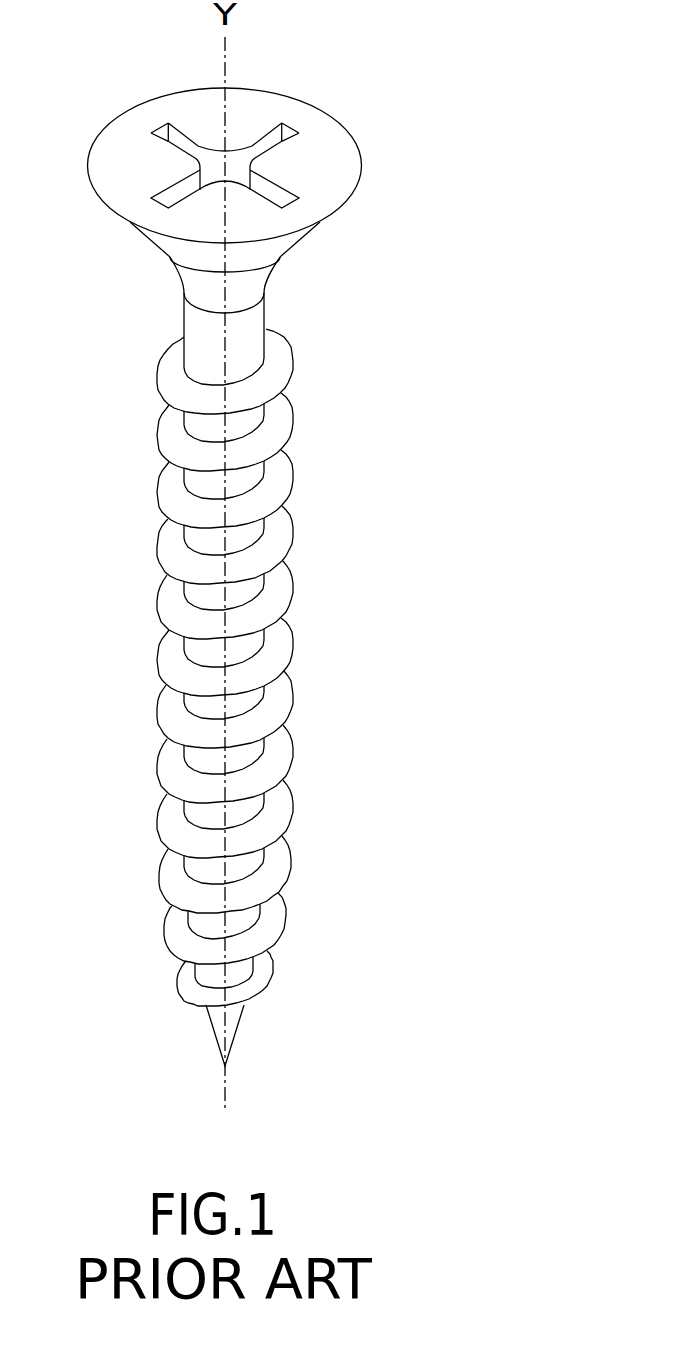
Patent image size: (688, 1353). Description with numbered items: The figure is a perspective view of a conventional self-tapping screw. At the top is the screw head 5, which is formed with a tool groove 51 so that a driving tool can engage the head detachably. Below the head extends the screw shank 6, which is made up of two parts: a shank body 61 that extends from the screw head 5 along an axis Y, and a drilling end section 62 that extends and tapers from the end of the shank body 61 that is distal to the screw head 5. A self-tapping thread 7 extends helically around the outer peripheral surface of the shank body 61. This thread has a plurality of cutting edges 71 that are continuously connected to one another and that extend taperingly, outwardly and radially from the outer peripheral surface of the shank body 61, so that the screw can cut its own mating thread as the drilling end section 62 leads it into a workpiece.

The screw head 5 is at (352, 165).
The tool groove 51 is at (271, 138).
The screw shank 6 is at (158, 580).
The shank body 61 is at (193, 698).
The drilling end section 62 is at (215, 1020).
The self-tapping thread 7 is at (322, 630).
The cutting edges 71 is at (292, 563).